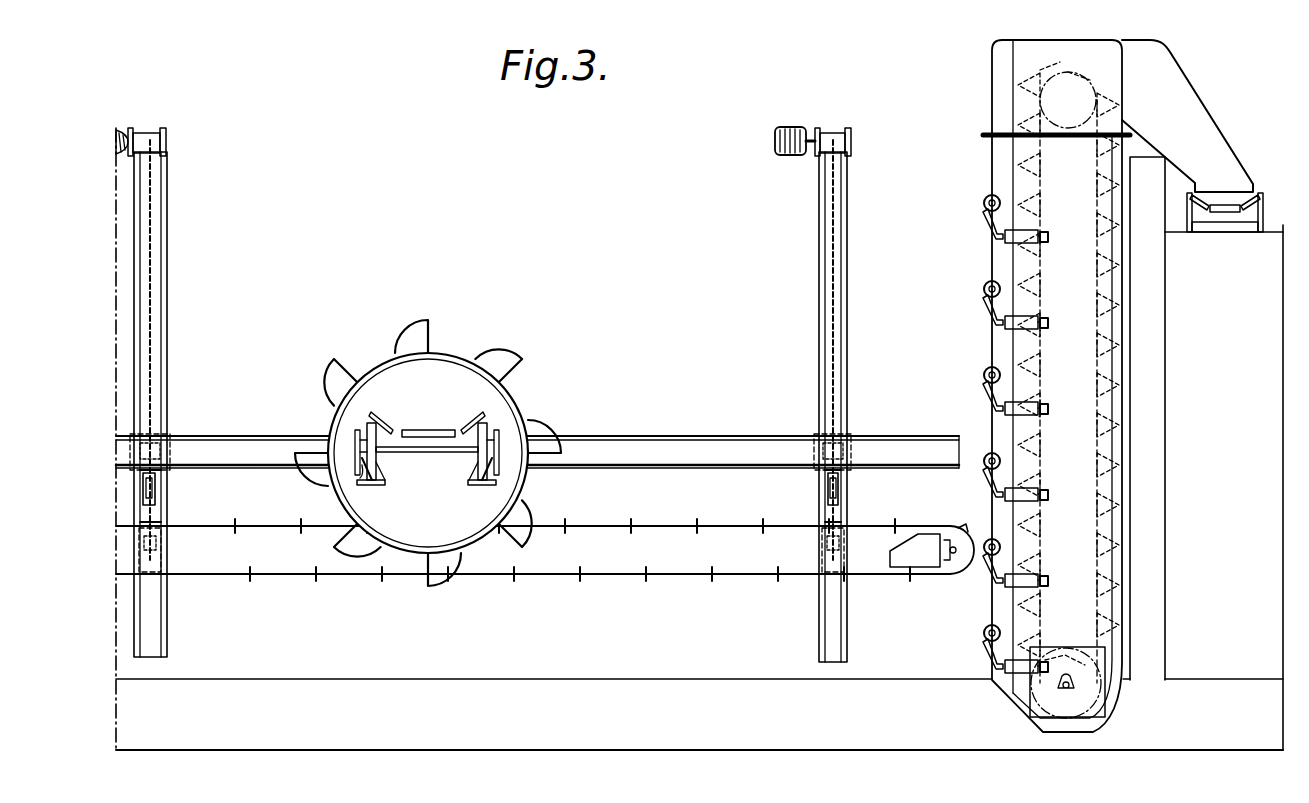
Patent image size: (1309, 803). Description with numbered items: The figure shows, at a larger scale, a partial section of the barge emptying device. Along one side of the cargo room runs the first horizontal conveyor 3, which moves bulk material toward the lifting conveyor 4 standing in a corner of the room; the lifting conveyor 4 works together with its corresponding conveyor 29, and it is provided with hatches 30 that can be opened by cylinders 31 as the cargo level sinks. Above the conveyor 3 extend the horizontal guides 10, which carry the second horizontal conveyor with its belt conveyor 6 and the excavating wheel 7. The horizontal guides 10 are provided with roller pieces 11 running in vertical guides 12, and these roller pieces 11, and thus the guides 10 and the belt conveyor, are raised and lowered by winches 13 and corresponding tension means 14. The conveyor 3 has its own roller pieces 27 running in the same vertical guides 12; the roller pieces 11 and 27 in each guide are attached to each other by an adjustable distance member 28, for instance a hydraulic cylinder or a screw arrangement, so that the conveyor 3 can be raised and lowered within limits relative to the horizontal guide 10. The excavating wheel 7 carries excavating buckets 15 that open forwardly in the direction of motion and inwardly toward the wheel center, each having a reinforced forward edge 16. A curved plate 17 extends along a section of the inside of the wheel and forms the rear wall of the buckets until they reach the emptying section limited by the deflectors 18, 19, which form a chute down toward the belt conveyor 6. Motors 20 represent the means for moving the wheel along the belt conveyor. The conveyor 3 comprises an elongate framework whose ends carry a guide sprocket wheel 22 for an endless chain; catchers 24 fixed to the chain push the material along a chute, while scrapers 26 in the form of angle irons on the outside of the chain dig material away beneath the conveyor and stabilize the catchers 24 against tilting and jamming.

The first horizontal conveyor 3 is at (545, 571).
The lifting conveyor 4 is at (1106, 386).
The belt conveyor 6 is at (452, 380).
The excavating wheel 7 is at (424, 472).
The horizontal guides 10 is at (887, 456).
The roller pieces 11 is at (160, 442).
The vertical guides 12 is at (163, 343).
The winches 13 is at (166, 141).
The tension means 14 is at (152, 272).
The excavating buckets 15 is at (357, 548).
The reinforced forward edge 16 is at (435, 582).
The curved plate 17 is at (350, 421).
The deflector 18 is at (384, 408).
The deflector 19 is at (488, 392).
The motors 20 is at (468, 472).
The guide sprocket wheel 22 is at (957, 577).
The catchers 24 is at (710, 576).
The scrapers 26 is at (778, 578).
The roller pieces 27 is at (155, 552).
The adjustable distance member 28 is at (152, 491).
The conveyor 29 is at (1228, 210).
The hatches 30 is at (989, 420).
The cylinders 31 is at (1012, 237).